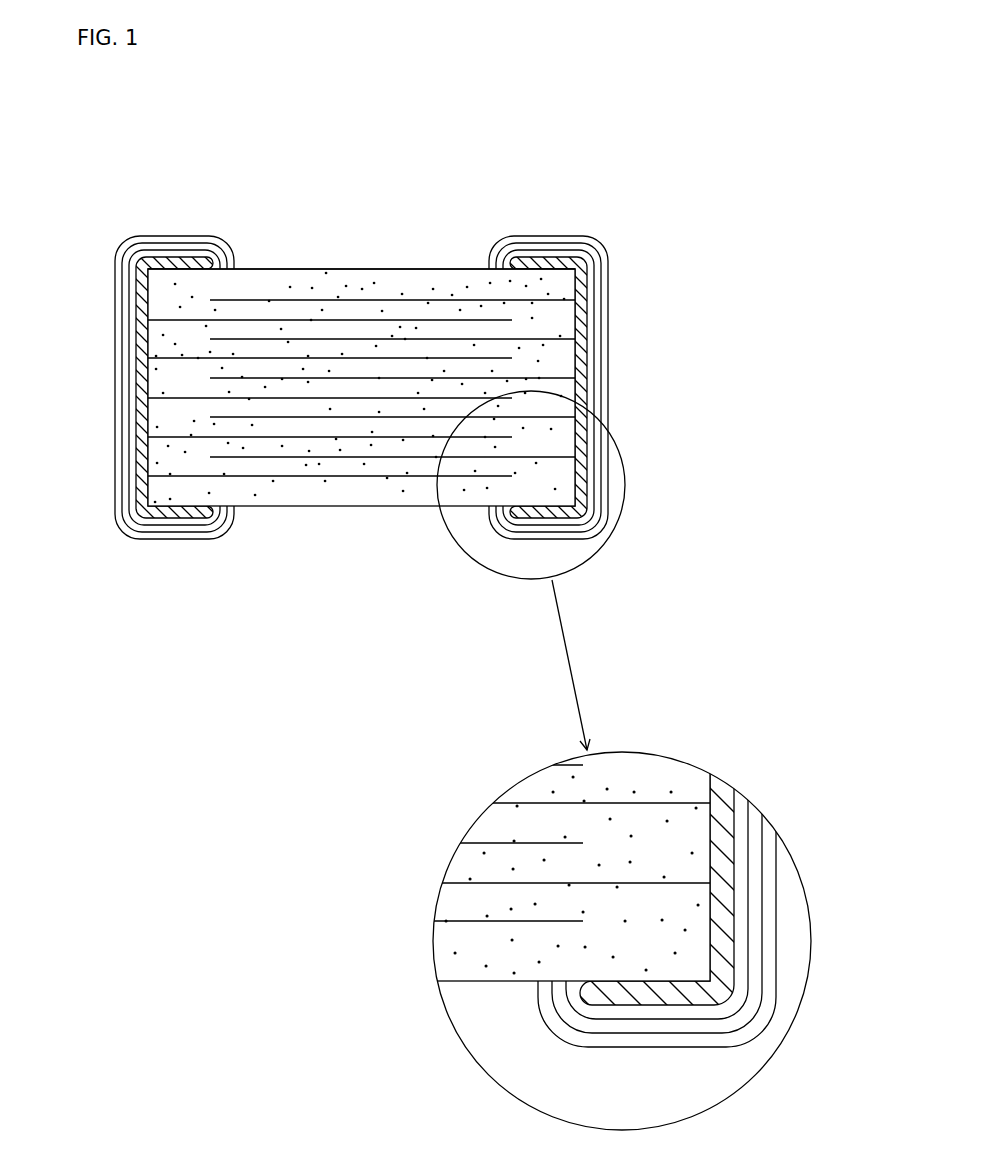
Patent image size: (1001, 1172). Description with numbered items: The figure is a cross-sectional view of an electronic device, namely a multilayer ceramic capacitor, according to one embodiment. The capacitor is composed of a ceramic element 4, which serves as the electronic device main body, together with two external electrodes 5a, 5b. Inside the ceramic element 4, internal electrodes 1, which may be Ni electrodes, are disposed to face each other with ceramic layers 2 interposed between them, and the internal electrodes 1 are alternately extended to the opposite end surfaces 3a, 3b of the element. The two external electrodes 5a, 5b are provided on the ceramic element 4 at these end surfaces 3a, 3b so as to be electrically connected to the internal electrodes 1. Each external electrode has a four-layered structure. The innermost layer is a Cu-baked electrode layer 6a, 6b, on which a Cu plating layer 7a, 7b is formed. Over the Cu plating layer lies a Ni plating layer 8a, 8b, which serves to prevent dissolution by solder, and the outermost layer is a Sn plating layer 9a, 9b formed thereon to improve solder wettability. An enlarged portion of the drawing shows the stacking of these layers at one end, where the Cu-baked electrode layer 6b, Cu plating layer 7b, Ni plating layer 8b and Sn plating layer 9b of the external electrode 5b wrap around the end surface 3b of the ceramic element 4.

The internal electrode 1 is at (371, 357).
The ceramic layer 2 is at (373, 440).
The end surface 3a is at (128, 508).
The end surface 3b is at (588, 345).
The ceramic element 4 is at (325, 268).
The external electrode 5a is at (128, 440).
The external electrode 5b is at (685, 622).
The Cu-baked electrode layer 6a is at (138, 462).
The Cu-baked electrode layer 6b is at (730, 996).
The Cu plating layer 7a is at (131, 425).
The Cu plating layer 7b is at (749, 975).
The Ni plating layer 8a is at (124, 367).
The Ni plating layer 8b is at (762, 938).
The Sn plating layer 9a is at (117, 309).
The Sn plating layer 9b is at (776, 908).